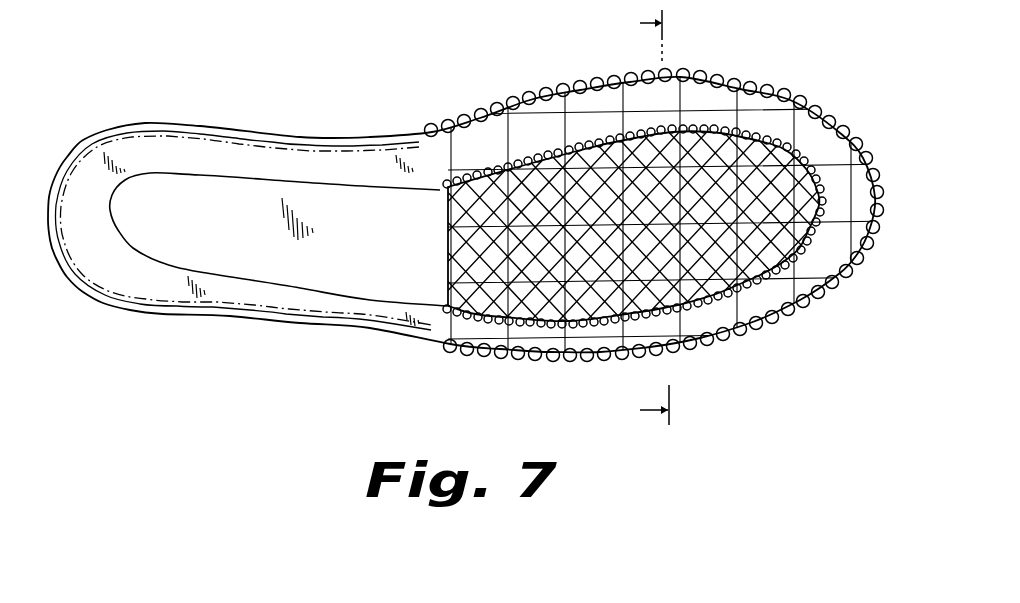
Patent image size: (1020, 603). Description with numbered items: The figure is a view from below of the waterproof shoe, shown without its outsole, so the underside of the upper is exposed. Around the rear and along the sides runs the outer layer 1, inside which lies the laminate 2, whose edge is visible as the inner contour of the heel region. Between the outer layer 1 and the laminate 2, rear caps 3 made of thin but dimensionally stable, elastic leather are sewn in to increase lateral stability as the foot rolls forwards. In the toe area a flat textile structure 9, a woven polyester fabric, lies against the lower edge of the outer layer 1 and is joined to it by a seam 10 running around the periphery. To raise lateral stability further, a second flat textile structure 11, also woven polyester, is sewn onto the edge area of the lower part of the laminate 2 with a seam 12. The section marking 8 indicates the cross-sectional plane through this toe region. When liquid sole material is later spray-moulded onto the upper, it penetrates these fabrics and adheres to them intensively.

The outer layer 1 is at (148, 122).
The laminate 2 is at (270, 165).
The rear caps 3 is at (205, 128).
The section line 8- 8 is at (678, 217).
The flat textile structure 9 is at (510, 157).
The seam 10 is at (758, 93).
The second flat textile structure 11 is at (447, 290).
The seam 12 is at (480, 173).